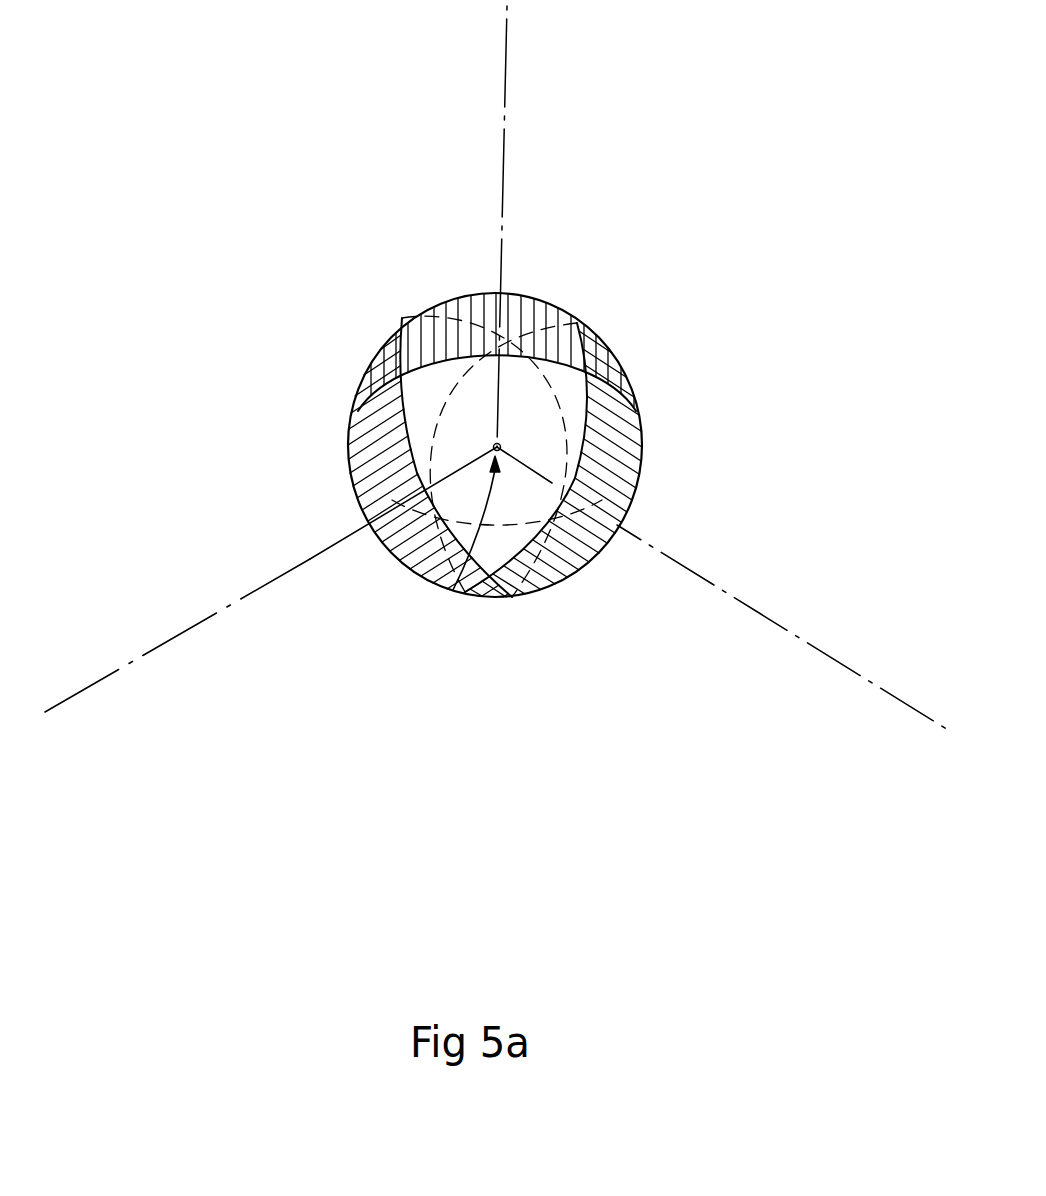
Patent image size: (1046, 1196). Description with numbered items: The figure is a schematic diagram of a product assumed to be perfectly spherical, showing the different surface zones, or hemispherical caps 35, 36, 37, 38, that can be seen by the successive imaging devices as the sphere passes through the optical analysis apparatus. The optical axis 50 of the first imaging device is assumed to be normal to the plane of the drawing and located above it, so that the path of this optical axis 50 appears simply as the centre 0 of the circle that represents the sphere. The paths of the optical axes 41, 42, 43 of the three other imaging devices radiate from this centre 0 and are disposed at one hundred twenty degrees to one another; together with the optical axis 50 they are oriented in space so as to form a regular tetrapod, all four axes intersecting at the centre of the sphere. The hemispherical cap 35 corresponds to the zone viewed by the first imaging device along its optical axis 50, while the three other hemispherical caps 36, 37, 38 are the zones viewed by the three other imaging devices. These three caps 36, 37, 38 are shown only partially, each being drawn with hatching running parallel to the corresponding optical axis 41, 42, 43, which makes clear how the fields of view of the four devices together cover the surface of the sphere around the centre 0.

The optical axis 42 is at (519, 75).
The optical axis 41 is at (263, 600).
The optical axis 43 is at (723, 603).
The hemispherical cap 37 is at (518, 297).
The hemispherical cap 35 is at (535, 352).
The hemispherical cap 36 is at (383, 533).
The hemispherical cap 38 is at (612, 503).
The centre 0 is at (494, 447).
The optical axis 50 is at (453, 592).